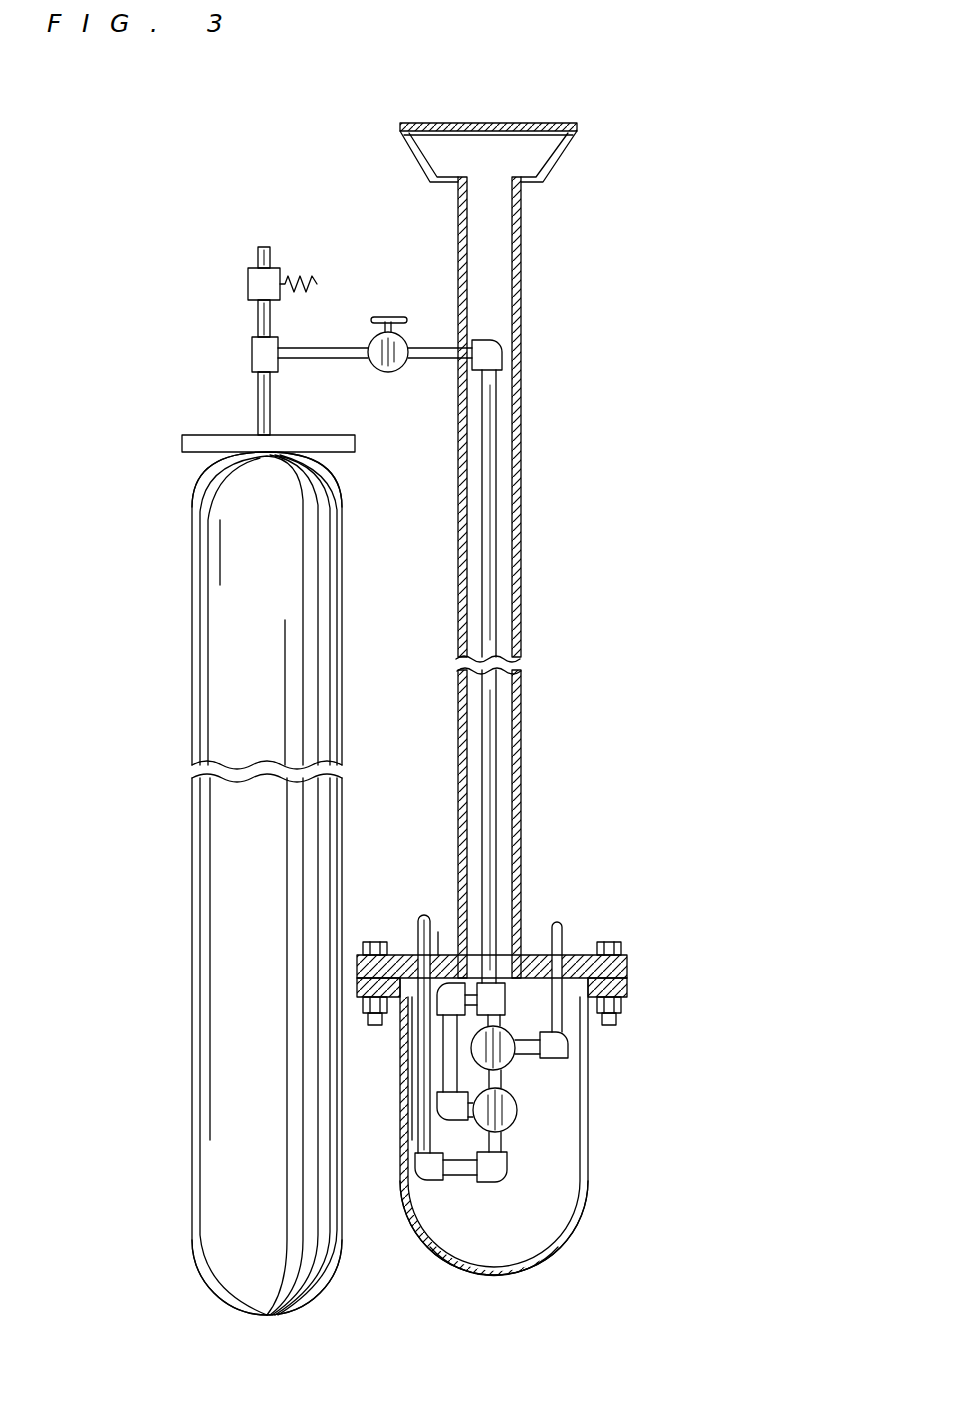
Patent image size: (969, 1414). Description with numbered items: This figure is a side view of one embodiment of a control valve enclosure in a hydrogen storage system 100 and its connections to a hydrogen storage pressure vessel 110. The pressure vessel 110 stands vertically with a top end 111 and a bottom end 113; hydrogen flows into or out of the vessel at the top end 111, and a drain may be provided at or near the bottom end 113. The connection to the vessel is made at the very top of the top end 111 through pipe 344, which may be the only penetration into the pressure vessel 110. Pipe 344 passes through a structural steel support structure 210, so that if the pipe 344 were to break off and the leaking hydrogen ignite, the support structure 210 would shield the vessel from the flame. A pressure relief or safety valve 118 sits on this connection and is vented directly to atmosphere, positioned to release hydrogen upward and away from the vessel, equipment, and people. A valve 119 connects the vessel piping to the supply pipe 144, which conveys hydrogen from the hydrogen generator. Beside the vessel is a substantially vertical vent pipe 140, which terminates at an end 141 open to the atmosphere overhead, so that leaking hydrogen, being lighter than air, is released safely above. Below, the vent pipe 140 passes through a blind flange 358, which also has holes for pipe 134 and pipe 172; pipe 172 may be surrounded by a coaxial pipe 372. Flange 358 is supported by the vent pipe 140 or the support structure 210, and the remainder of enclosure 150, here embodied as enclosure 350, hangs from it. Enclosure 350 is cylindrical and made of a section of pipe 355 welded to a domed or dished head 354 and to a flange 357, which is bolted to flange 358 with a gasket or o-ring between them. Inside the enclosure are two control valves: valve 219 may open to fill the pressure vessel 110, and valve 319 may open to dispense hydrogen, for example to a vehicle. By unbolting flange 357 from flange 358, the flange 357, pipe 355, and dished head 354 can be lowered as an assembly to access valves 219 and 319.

The system 100 is at (140, 185).
The pressure vessel 110 is at (190, 593).
The top end 111 is at (200, 470).
The bottom end 113 is at (208, 1290).
The pressure relief valve 118 is at (248, 285).
The valve 119 is at (380, 371).
The pipe 134 is at (556, 922).
The vent pipe 140 is at (525, 283).
The end 141 is at (555, 168).
The supply pipe 144 is at (498, 510).
The enclosure 150 is at (590, 1112).
The pipe 172 is at (425, 914).
The support structure 210 is at (200, 437).
The valve 219 is at (515, 1056).
The valve 319 is at (518, 1118).
The pipe 344 is at (258, 398).
The enclosure 350 is at (590, 1188).
The dished head 354 is at (570, 1255).
The section of pipe 355 is at (588, 1052).
The flange 357 is at (627, 990).
The flange 358 is at (627, 960).
The pipe 372 is at (438, 930).